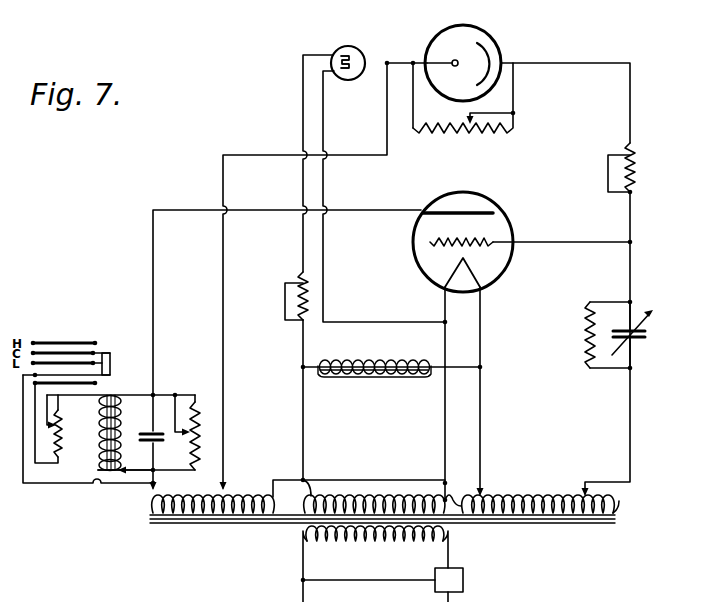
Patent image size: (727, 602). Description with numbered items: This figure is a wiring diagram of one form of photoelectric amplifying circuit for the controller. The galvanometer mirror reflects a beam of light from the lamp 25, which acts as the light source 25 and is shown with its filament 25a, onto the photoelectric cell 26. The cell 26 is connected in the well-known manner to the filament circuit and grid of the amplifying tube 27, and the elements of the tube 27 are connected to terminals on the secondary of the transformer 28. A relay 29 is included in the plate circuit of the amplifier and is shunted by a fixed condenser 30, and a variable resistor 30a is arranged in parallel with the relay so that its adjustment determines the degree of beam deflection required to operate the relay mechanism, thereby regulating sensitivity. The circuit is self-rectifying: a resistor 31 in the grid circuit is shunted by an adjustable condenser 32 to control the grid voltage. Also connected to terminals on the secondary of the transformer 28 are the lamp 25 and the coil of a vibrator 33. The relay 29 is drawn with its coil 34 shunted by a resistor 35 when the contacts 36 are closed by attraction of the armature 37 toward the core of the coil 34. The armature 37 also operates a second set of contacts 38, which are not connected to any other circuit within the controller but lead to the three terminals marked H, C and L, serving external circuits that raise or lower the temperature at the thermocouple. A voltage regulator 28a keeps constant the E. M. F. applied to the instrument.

The light source 25 is at (335, 48).
The tube filament 25a is at (347, 62).
The photoelectric cell 26 is at (494, 40).
The amplifying tube 27 is at (511, 220).
The transformer 28 is at (493, 528).
The voltage regulator 28a is at (463, 580).
The relay 29 is at (97, 469).
The fixed condenser 30 is at (157, 444).
The variable resistor 30a is at (200, 424).
The resistor 31 is at (587, 343).
The adjustable condenser 32 is at (645, 334).
The vibrator 33 is at (386, 378).
The relay coil 34 is at (123, 418).
The resistor 35 is at (62, 425).
The contacts 36 is at (100, 384).
The armature 37 is at (111, 353).
The contacts 38 is at (98, 345).